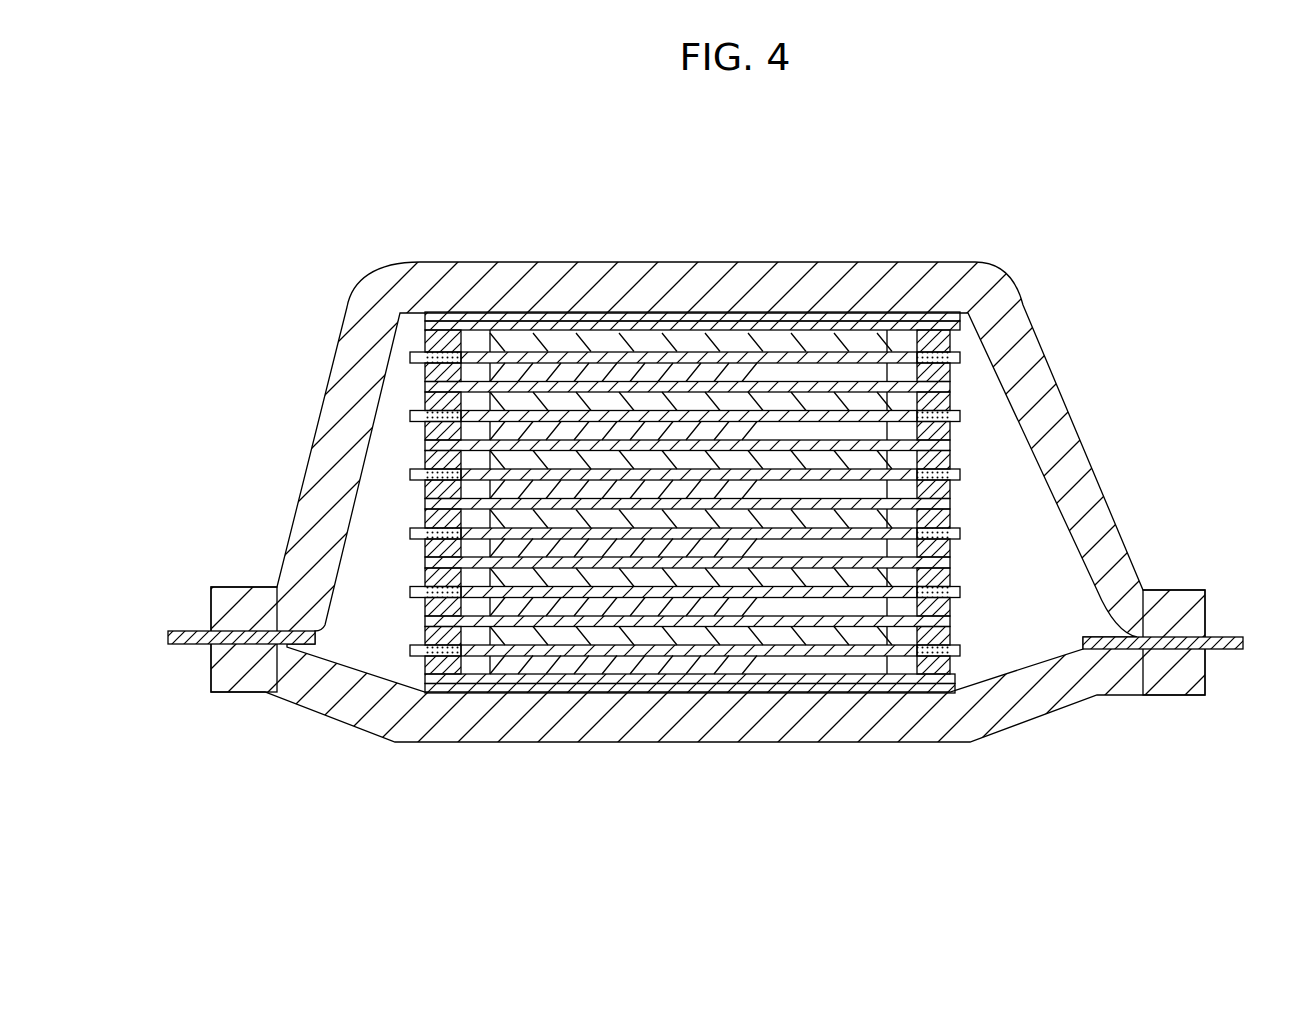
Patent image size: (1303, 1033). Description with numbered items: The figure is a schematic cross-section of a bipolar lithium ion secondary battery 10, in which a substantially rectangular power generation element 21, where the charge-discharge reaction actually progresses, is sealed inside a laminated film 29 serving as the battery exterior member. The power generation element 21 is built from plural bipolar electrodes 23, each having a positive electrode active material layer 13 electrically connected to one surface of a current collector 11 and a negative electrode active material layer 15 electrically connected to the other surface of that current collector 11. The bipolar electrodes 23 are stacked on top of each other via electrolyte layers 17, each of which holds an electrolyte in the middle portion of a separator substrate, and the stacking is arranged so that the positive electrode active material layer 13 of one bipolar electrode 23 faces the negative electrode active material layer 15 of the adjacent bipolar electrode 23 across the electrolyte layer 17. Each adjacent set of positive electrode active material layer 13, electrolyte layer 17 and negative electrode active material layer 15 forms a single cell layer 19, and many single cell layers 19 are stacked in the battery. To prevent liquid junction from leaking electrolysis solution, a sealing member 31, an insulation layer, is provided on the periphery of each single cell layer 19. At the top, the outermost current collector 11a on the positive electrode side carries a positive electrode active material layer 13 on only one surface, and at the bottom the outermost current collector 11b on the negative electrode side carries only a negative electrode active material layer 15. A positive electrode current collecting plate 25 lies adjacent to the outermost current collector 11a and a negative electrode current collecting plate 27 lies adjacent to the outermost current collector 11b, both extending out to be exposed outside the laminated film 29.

The bipolar secondary battery 10 is at (300, 217).
The current collector 11 is at (738, 382).
The outermost current collector on the positive electrode side 11a is at (800, 325).
The outermost current collector on the negative electrode side 11b is at (833, 678).
The positive electrode active material layer 13 is at (667, 403).
The negative electrode active material layer 15 is at (559, 430).
The electrolyte layer 17 is at (615, 420).
The single cell layer 19 is at (543, 201).
The power generation element 21 is at (978, 556).
The bipolar electrode 23 is at (712, 808).
The positive electrode current collecting plate 25 is at (191, 630).
The negative electrode current collecting plate 27 is at (1228, 636).
The laminated film 29 is at (1193, 588).
The sealing member 31 is at (950, 352).